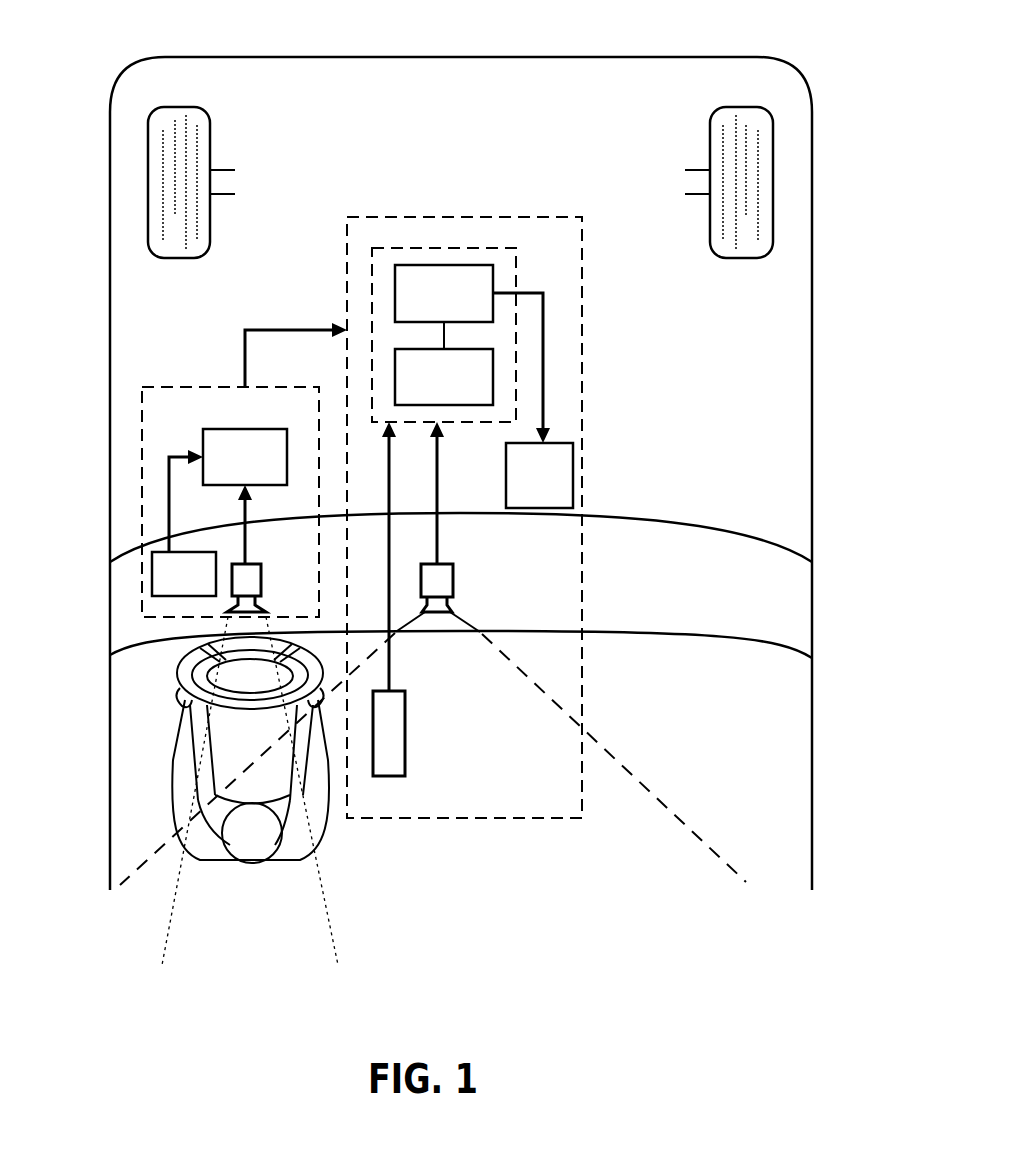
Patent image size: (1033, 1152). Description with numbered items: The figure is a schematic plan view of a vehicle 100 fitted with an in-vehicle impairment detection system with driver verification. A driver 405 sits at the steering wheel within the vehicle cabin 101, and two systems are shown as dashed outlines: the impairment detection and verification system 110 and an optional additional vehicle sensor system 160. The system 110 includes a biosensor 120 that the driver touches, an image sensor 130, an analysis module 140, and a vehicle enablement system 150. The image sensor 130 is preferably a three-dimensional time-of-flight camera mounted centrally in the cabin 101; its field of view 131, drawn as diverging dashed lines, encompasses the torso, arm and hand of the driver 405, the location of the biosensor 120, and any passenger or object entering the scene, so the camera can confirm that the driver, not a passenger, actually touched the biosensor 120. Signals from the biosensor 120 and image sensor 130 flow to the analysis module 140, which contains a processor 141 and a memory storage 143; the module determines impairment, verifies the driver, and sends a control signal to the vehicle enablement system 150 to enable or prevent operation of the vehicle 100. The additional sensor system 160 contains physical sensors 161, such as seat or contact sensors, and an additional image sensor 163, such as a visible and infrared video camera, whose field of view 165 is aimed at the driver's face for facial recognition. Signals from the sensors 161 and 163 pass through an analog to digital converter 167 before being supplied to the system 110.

The vehicle 100 is at (505, 57).
The vehicle cabin 101 is at (609, 684).
The impairment detection and verification system 110 is at (537, 806).
The biosensor 120 is at (405, 717).
The image sensor 130 is at (452, 577).
The field of view 131 is at (637, 782).
The analysis module 140 is at (492, 335).
The processor 141 is at (422, 392).
The memory storage 143 is at (422, 308).
The vehicle enablement system 150 is at (518, 490).
The additional vehicle sensor system 160 is at (230, 502).
The physical sensors 161 is at (162, 587).
The additional image sensor 163 is at (245, 574).
The field of view 165 is at (322, 910).
The analog to digital converter 167 is at (223, 472).
The driver 405 is at (277, 850).